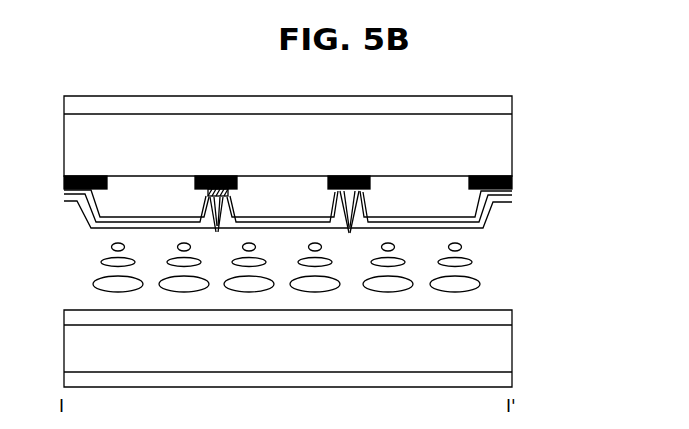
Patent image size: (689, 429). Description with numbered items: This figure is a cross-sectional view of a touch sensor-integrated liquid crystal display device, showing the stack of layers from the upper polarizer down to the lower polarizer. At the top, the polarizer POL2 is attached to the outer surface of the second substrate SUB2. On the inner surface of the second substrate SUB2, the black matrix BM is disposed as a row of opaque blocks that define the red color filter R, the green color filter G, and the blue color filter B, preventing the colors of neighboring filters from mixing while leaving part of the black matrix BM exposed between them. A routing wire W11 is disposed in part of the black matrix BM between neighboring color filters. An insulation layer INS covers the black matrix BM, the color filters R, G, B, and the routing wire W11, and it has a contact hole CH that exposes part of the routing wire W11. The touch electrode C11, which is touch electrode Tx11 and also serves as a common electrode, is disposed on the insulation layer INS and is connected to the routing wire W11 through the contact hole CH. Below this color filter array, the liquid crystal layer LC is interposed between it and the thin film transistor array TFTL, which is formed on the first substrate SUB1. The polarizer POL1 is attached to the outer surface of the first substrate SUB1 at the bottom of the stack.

The polarizer POL2 is at (500, 108).
The second substrate SUB2 is at (500, 143).
The black matrix BM is at (512, 178).
The insulation layer INS is at (512, 190).
The touch electrode C11 is at (512, 200).
The contact hole CH is at (217, 233).
The routing wire W11 is at (208, 193).
The liquid crystal layer LC is at (500, 268).
The thin film transistor array TFTL is at (500, 320).
The first substrate SUB1 is at (500, 350).
The polarizer POL1 is at (500, 381).
The red color filter R is at (150, 198).
The green color filter G is at (284, 198).
The blue color filter B is at (420, 198).